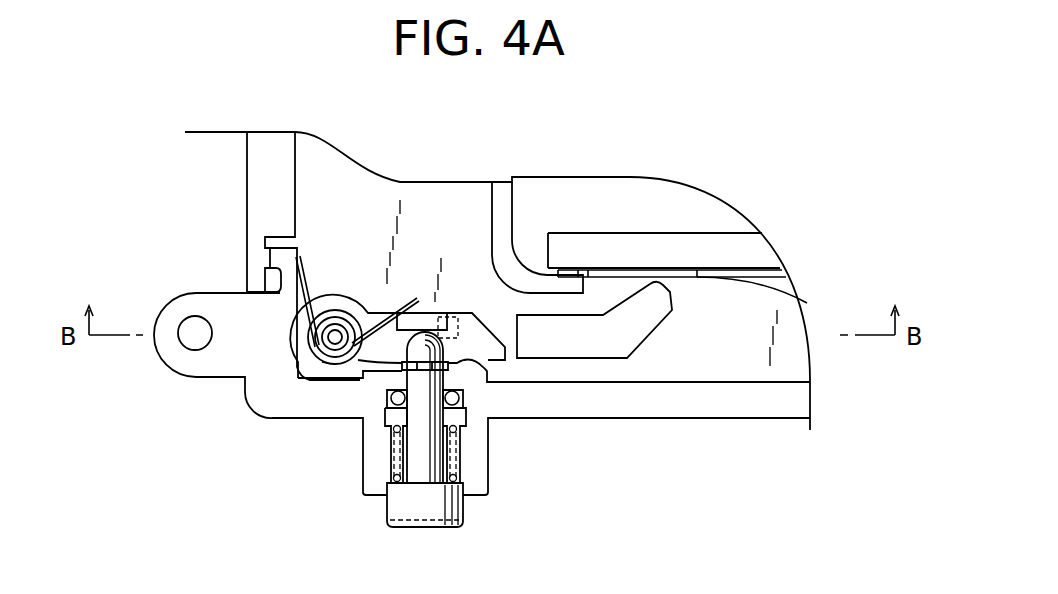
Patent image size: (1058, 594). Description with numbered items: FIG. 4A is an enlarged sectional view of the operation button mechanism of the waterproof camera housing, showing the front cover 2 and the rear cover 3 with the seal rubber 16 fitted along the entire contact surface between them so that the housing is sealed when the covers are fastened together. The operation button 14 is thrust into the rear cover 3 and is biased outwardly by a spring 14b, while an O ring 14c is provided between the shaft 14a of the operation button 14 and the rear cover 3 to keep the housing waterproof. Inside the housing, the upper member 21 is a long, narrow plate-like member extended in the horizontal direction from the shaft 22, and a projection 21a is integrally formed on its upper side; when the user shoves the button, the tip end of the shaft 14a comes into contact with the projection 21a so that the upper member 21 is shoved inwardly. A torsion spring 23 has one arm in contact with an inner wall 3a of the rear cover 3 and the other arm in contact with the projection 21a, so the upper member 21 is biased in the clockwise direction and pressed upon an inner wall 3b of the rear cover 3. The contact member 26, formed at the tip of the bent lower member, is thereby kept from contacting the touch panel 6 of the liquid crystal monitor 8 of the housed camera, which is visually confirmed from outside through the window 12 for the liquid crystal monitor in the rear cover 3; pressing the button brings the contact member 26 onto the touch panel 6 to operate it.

The front cover 2 is at (250, 178).
The rear cover 3 is at (175, 300).
The inner wall 3a is at (295, 298).
The inner wall 3b is at (512, 372).
The touch panel 6 is at (807, 303).
The liquid crystal monitor 8 is at (765, 240).
The window for a liquid crystal monitor 12 is at (768, 400).
The operation button 14 is at (463, 523).
The shaft 14a is at (430, 465).
The spring 14b is at (387, 478).
The O ring 14c is at (391, 398).
The seal rubber 16 is at (263, 270).
The upper member 21 is at (487, 365).
The projection 21a is at (428, 312).
The shaft 22 is at (340, 312).
The torsion spring 23 is at (322, 362).
The contact member 26 is at (637, 352).